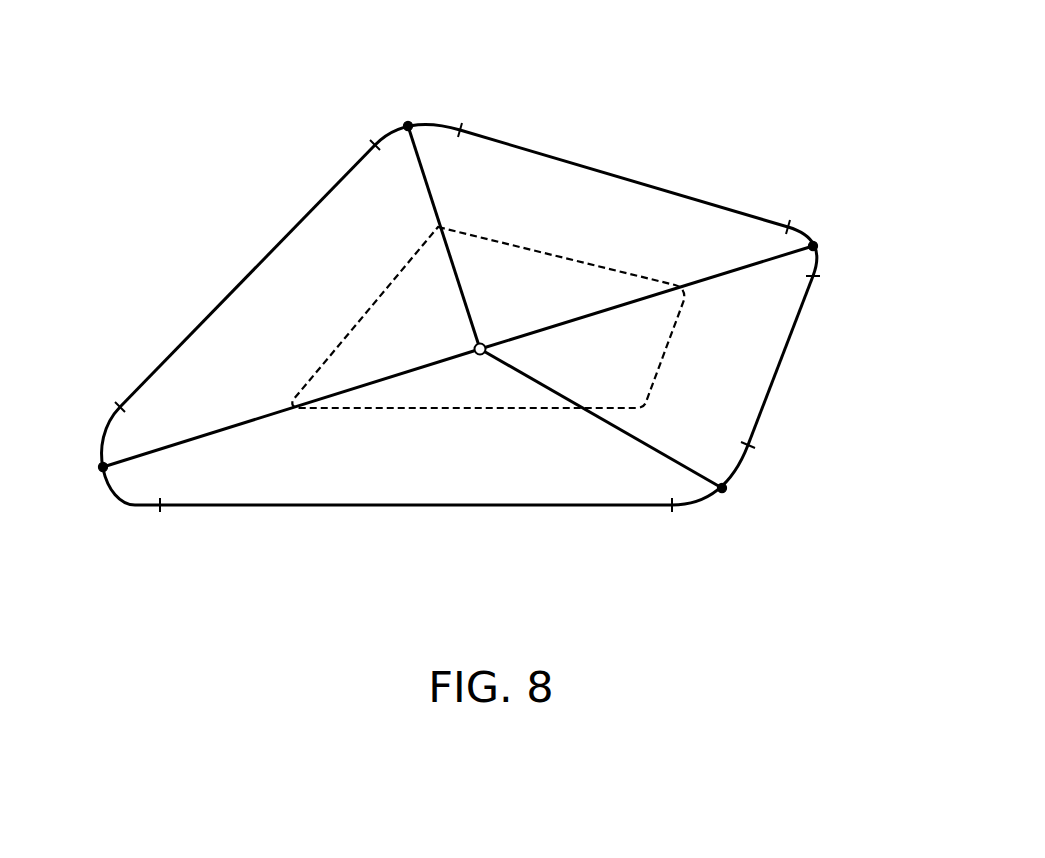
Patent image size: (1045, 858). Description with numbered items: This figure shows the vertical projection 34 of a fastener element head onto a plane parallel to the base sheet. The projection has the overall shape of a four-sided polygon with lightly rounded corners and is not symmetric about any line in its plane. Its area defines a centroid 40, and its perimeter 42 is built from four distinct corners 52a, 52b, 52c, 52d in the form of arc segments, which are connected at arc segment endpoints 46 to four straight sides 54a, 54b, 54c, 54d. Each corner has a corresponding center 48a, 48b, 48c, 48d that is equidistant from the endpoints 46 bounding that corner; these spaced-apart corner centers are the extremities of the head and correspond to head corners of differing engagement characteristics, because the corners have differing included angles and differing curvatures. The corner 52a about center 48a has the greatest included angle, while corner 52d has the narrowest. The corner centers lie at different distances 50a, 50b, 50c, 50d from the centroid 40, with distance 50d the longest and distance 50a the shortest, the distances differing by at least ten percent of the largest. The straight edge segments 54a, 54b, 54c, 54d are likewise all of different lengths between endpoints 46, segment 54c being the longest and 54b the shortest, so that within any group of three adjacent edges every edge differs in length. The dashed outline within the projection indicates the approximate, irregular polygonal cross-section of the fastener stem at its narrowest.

The vertical projection 34 is at (490, 318).
The centroid 40 is at (474, 349).
The perimeter 42 is at (490, 318).
The arc segment endpoints 46 is at (462, 128).
The corner center 48a is at (407, 123).
The corner center 48b is at (813, 244).
The corner center 48c is at (725, 489).
The corner center 48d is at (100, 467).
The distance 50a is at (433, 194).
The distance 50b is at (718, 279).
The distance 50c is at (607, 424).
The distance 50d is at (221, 433).
The corner 52a is at (438, 123).
The corner 52b is at (817, 263).
The corner 52c is at (698, 503).
The corner 52d is at (133, 503).
The straight edge segment 54a is at (578, 162).
The straight edge segment 54b is at (789, 346).
The straight edge segment 54c is at (352, 505).
The straight edge segment 54d is at (228, 292).